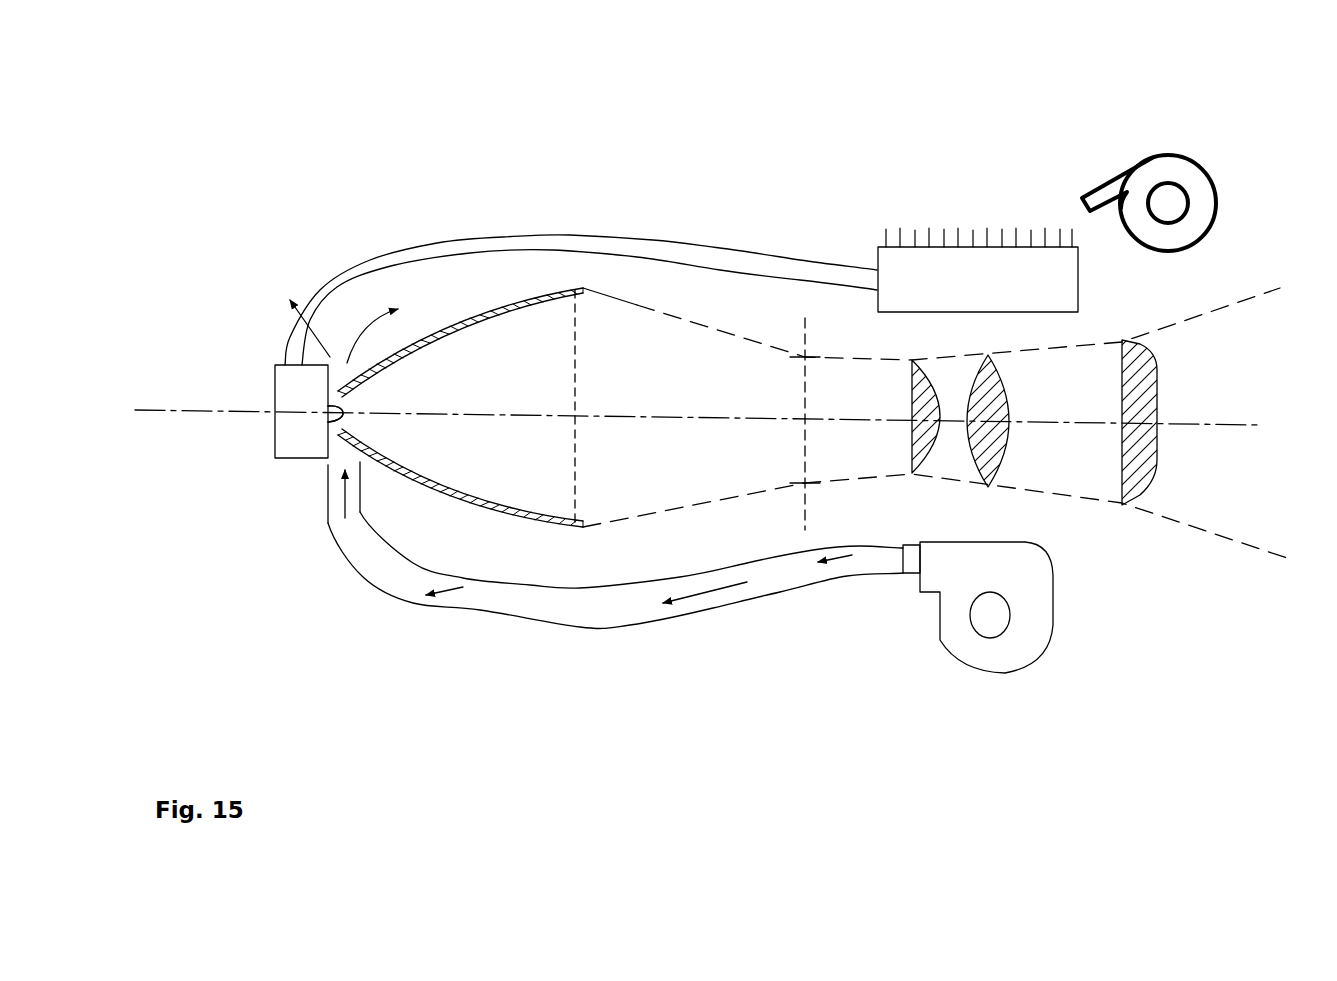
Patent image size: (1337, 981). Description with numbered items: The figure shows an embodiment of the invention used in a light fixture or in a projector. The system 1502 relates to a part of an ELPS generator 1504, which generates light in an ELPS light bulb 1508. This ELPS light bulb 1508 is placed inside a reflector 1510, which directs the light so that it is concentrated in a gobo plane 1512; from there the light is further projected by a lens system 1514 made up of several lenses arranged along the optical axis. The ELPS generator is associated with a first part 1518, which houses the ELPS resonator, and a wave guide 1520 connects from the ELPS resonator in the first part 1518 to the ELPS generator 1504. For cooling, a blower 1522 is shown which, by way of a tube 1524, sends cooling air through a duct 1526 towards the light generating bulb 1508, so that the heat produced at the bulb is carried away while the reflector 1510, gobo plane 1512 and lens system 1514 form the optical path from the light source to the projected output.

The system 1502 is at (455, 204).
The ELPS generator 1504 is at (293, 460).
The ELPS light bulb 1508 is at (350, 413).
The reflector 1510 is at (442, 327).
The gobo plane 1512 is at (805, 320).
The lens system 1514 is at (917, 500).
The first part (ELPS resonator) 1518 is at (877, 263).
The wave guide 1520 is at (692, 240).
The blower 1522 is at (980, 663).
The tube 1524 is at (703, 613).
The duct 1526 is at (328, 483).